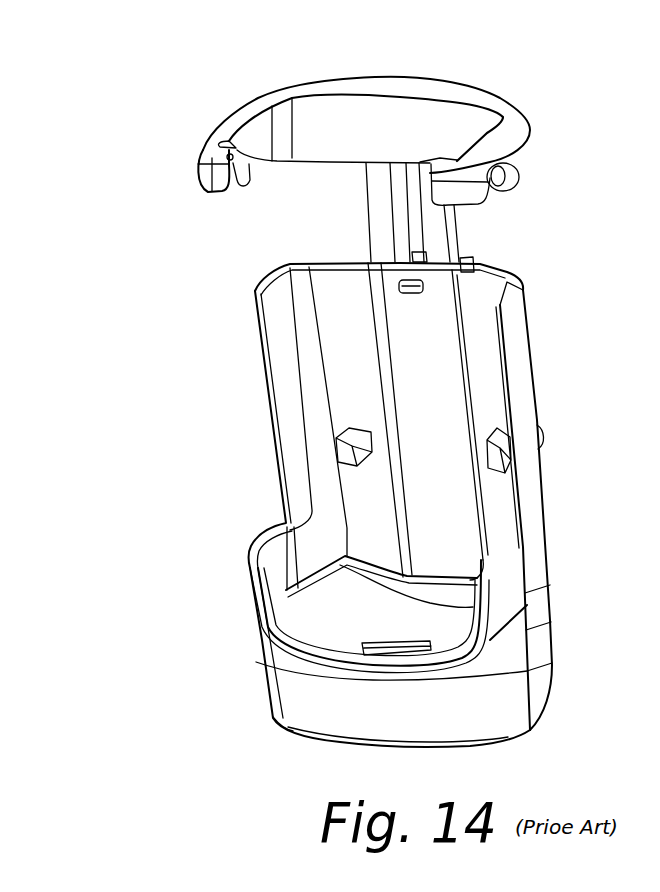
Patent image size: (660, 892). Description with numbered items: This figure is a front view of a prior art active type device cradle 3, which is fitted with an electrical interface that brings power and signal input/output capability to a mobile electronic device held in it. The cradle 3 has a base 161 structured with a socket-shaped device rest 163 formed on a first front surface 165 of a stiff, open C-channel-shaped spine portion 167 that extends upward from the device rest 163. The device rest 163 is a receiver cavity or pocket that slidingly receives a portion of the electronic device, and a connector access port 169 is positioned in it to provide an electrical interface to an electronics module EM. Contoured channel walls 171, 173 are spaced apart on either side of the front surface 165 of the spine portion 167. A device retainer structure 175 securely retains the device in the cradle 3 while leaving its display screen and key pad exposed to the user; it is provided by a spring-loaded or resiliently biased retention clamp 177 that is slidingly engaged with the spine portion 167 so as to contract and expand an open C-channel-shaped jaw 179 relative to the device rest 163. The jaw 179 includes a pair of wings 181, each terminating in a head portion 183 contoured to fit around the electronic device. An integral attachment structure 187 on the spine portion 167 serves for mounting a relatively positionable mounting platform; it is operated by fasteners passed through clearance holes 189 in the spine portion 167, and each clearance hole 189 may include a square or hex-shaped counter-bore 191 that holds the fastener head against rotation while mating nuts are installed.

The device cradle 3 is at (566, 72).
The base 161 is at (390, 515).
The socket-shaped device rest 163 is at (370, 619).
The front surface 165 is at (347, 400).
The spine portion 167 is at (527, 303).
The connector access port 169 is at (405, 648).
The channel wall 171 is at (258, 310).
The channel wall 173 is at (559, 503).
The device retainer structure 175 is at (374, 126).
The retention clamp 177 is at (374, 110).
The jaw 179 is at (313, 79).
The wing 181 is at (222, 132).
The head portion 183 is at (197, 177).
The attachment structure 187 is at (540, 440).
The clearance hole 189 is at (337, 461).
The counter-bore 191 is at (493, 437).
The electronics module EM is at (310, 736).